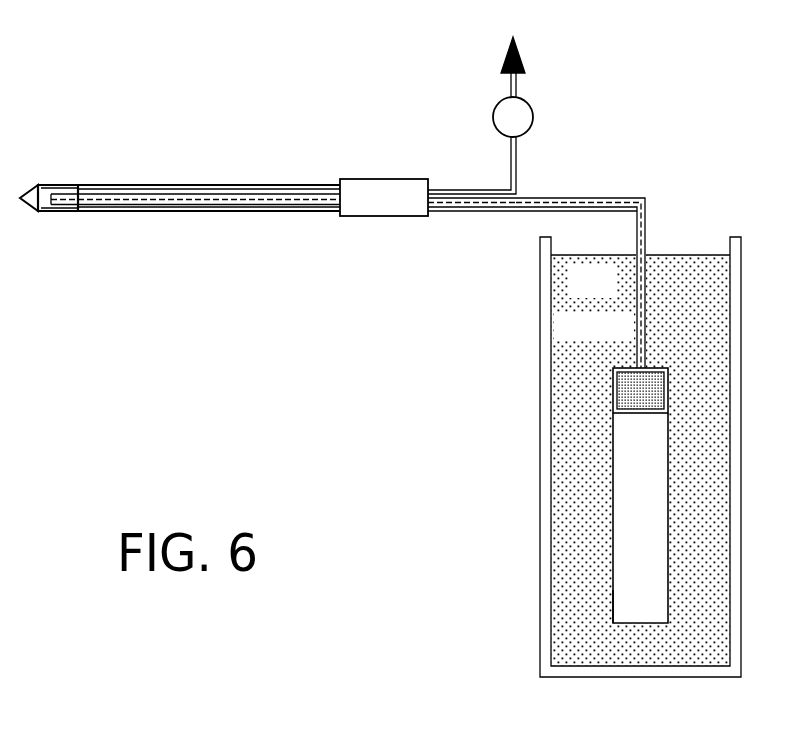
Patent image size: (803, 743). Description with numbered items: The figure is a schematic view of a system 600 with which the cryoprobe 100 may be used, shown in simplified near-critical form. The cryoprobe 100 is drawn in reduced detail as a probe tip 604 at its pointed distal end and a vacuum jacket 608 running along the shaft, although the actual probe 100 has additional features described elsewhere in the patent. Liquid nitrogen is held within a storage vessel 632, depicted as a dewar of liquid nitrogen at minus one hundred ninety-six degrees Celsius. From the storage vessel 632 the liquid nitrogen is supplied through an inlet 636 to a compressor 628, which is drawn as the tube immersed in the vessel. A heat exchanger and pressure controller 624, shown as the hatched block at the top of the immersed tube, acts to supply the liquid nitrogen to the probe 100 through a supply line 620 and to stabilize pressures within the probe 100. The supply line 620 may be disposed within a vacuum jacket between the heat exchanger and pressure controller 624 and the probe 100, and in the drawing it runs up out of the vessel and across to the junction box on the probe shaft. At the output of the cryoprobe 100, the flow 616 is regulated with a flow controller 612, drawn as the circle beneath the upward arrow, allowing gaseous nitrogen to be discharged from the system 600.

The cryoprobe 100 is at (172, 165).
The system 600 is at (395, 357).
The probe tip 604 is at (45, 178).
The vacuum jacket 608 is at (247, 187).
The flow controller 612 is at (490, 108).
The flow 616 is at (520, 167).
The supply line 620 is at (648, 218).
The heat exchanger and pressure controller 624 is at (612, 390).
The compressor 628 is at (642, 535).
The storage vessel 632 is at (538, 625).
The inlet 636 is at (617, 626).